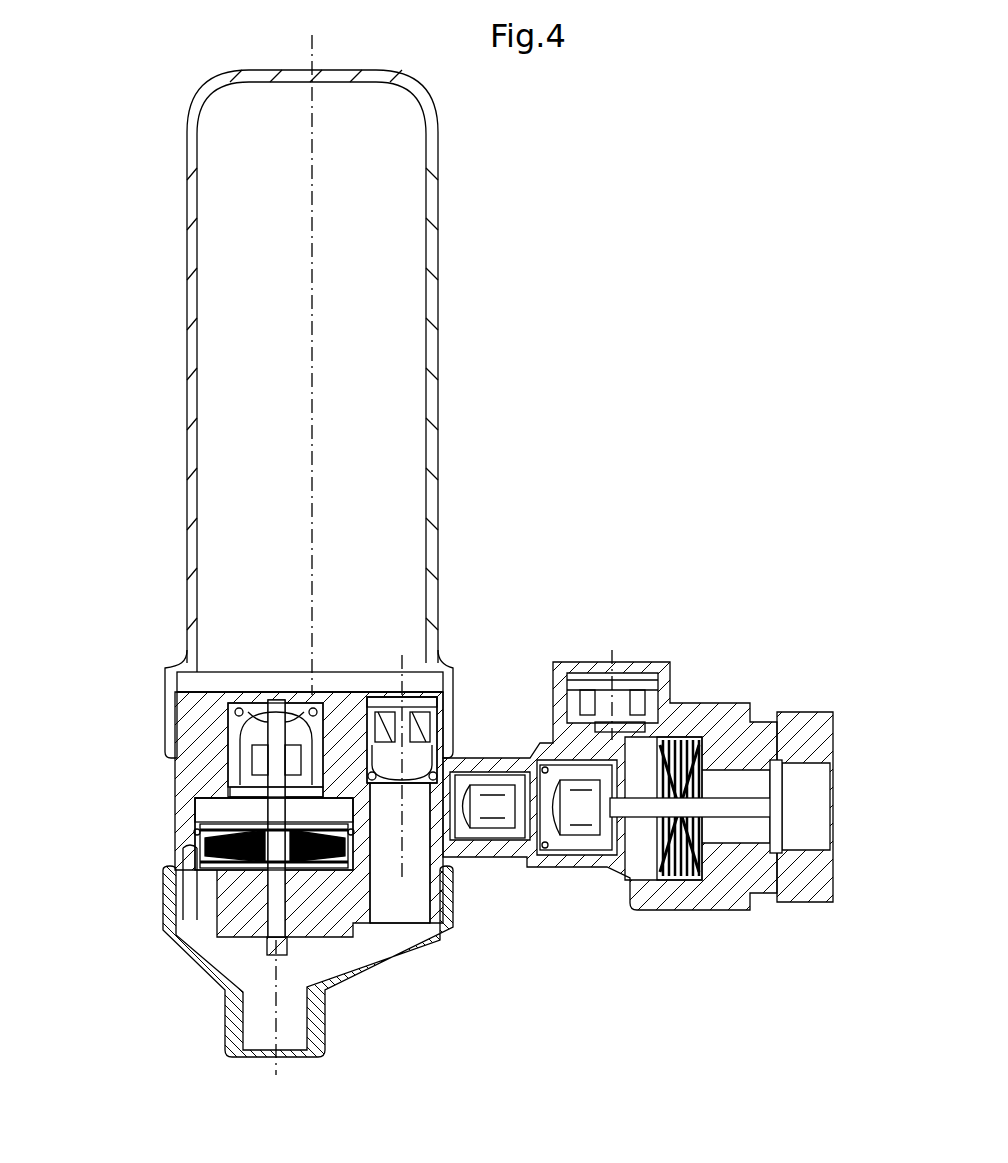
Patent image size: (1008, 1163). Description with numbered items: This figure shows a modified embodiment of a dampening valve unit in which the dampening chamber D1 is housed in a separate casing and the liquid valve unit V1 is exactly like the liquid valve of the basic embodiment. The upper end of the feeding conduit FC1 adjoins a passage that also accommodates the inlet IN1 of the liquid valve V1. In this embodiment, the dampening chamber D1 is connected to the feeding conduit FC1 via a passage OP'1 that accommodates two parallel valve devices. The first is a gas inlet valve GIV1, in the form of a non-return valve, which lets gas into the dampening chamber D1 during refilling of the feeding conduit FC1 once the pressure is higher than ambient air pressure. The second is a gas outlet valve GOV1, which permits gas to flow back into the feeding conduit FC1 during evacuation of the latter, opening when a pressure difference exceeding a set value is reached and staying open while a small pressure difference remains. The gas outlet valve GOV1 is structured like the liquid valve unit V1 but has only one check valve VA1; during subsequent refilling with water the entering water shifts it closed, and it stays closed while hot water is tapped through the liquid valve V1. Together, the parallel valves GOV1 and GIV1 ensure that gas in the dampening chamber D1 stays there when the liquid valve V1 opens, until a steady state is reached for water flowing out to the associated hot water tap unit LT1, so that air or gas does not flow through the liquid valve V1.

The dampening chamber D1 is at (436, 343).
The check valve VA1 is at (245, 752).
The gas inlet valve GIV1 is at (410, 772).
The gas outlet valve GOV1 is at (158, 823).
The inlet IN1 is at (415, 870).
The passage OP'1 is at (397, 988).
The feeding conduit FC1 is at (308, 987).
The liquid valve unit V1 is at (600, 888).
The hot water tap unit LT1 is at (450, 807).